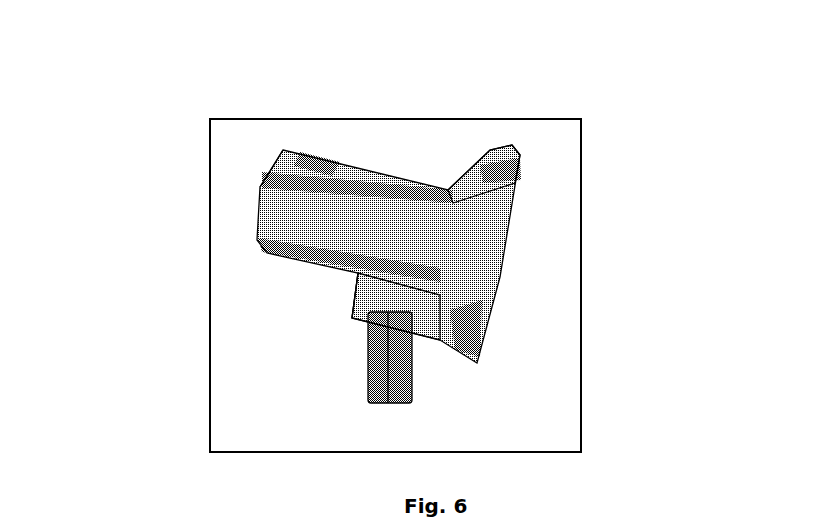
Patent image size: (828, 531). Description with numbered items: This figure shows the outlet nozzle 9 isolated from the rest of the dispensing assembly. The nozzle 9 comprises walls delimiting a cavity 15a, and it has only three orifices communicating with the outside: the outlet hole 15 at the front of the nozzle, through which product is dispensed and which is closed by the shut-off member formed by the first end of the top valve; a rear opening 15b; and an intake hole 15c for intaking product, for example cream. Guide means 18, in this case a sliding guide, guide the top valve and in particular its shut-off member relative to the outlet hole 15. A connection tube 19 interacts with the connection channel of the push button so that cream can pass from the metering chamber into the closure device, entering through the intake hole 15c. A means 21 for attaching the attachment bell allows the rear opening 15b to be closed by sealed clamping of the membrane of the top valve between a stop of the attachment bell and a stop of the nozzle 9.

The outlet nozzle 9 is at (237, 259).
The outlet hole 15 is at (258, 202).
The cavity 15a is at (506, 216).
The rear opening 15b is at (500, 267).
The intake hole 15c is at (390, 408).
The guide means 18 is at (322, 172).
The connection tube 19 is at (368, 362).
The means for attaching the attachment bell 21 is at (508, 153).